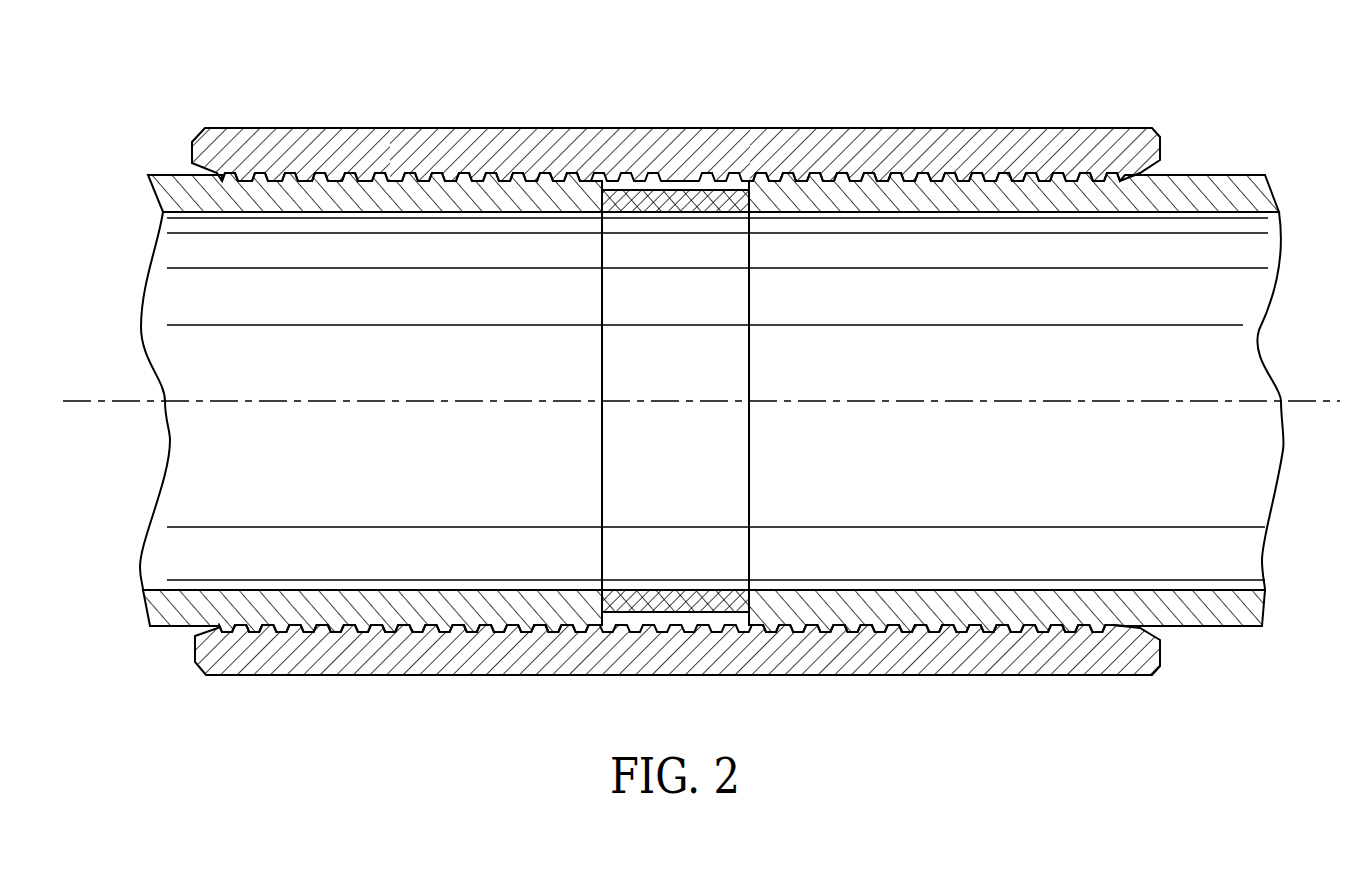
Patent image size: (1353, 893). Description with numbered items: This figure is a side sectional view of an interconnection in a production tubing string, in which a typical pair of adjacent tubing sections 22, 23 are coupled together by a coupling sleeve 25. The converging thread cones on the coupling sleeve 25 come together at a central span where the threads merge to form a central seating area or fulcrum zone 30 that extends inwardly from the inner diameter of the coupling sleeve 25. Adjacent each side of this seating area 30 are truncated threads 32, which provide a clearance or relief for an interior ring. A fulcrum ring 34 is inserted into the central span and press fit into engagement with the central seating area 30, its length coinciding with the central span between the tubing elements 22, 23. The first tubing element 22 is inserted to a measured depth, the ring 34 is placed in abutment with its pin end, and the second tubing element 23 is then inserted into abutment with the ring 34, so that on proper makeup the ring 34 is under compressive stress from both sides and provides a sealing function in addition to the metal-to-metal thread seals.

The tubing section 22 is at (398, 190).
The tubing section 23 is at (952, 197).
The coupling sleeve 25 is at (783, 150).
The central seating area 30 is at (667, 185).
The truncated threads 32 is at (632, 182).
The fulcrum ring 34 is at (694, 222).